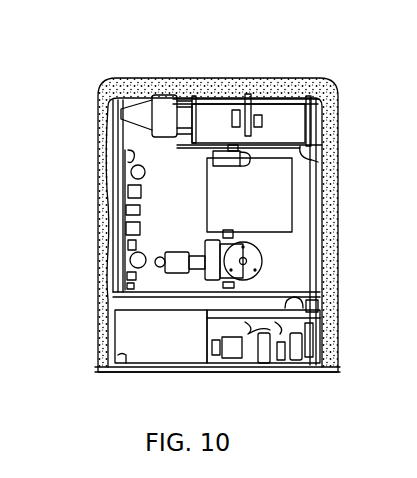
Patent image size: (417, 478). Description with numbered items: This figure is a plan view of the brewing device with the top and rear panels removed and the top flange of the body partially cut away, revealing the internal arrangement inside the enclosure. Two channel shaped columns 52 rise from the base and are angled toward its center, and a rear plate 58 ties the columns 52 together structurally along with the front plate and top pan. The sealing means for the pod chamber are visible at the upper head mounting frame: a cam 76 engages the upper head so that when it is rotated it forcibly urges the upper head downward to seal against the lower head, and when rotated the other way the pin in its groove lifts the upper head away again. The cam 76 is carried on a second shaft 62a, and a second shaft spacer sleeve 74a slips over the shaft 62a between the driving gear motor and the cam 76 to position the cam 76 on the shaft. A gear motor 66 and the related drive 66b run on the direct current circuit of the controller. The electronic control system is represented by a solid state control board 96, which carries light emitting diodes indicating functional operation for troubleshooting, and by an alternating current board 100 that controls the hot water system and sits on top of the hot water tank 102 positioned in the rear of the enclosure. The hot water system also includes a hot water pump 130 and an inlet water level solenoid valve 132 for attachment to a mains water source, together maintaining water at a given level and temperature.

The channel shaped columns 52 is at (178, 97).
The second shaft 62a is at (213, 97).
The second shaft spacer sleeve 74a is at (244, 84).
The cam 76 is at (285, 110).
The lamp assembly 66b is at (152, 124).
The gear motor 66 is at (256, 199).
The solid state control board 96 is at (120, 199).
The rear plate 58 is at (312, 172).
The hot water pump 130 is at (262, 266).
The inlet water level solenoid valve 132 is at (312, 305).
The alternating current board 100 is at (303, 333).
The hot water tank 102 is at (117, 303).